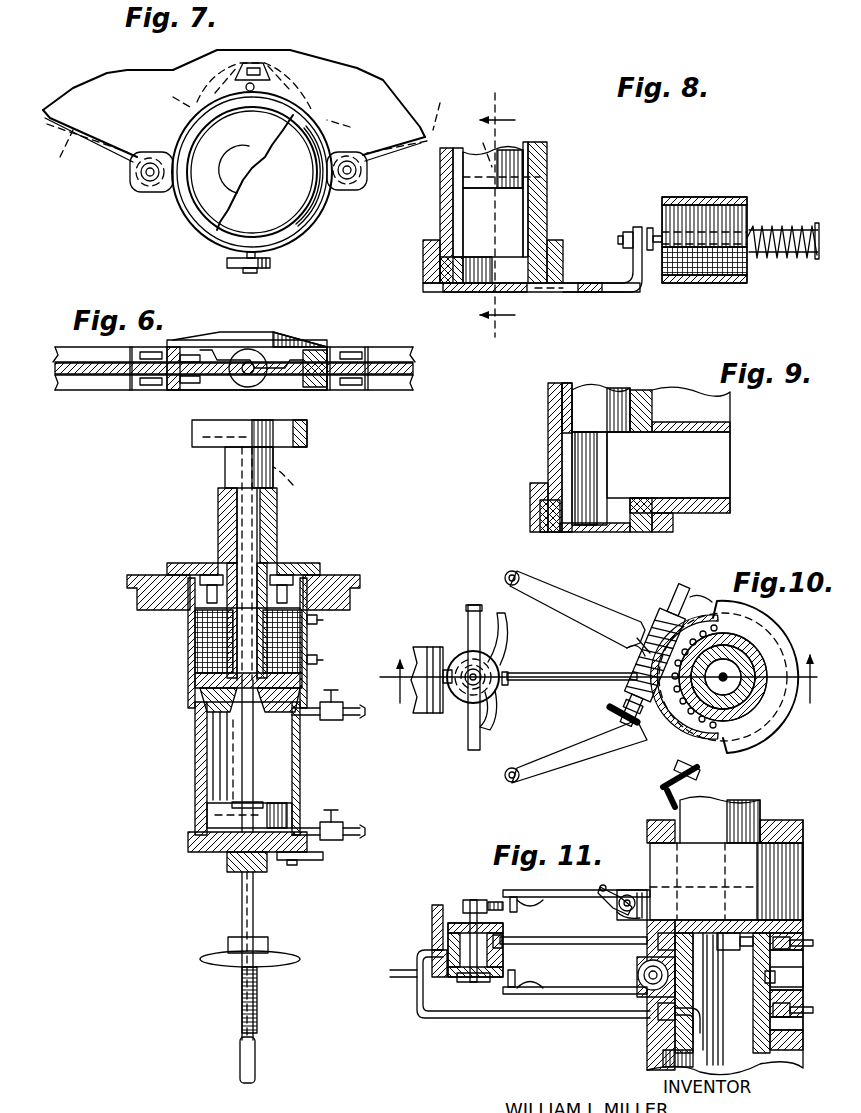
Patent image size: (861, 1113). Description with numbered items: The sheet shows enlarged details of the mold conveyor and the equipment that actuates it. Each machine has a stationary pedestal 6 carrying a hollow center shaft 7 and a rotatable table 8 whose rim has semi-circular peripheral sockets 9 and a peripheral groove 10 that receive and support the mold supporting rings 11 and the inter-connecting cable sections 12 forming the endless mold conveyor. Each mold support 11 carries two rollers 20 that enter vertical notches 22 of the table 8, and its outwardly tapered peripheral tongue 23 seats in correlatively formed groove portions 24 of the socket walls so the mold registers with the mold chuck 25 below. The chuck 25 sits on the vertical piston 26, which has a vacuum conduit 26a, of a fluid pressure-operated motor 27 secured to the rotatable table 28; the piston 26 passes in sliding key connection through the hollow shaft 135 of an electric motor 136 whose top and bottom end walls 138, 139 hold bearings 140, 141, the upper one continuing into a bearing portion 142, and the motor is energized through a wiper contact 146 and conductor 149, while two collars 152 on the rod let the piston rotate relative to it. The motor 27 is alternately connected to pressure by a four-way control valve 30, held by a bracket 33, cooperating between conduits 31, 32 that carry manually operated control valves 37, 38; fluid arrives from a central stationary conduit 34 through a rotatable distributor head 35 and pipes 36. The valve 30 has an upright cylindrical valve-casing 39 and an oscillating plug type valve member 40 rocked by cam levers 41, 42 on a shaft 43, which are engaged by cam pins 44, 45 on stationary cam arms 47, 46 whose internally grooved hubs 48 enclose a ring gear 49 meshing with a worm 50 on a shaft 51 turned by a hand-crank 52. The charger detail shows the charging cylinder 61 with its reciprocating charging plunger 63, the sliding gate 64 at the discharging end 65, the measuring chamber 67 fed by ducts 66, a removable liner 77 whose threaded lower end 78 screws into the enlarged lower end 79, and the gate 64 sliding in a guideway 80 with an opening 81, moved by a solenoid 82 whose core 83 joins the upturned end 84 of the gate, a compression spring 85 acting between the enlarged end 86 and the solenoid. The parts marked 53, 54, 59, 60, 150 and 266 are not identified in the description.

In FIG. 10, the stationary pedestal 6 is at (748, 717).
In FIG. 11, the stationary pedestal 6 is at (647, 1057).
In FIG. 10, the hollow center shaft 7 is at (747, 693).
In FIG. 11, the hollow center shaft 7 is at (765, 803).
In FIG. 7, the rotatable table 8 is at (363, 87).
In FIG. 6, the rotatable table 8 is at (377, 350).
In FIG. 7, the semi-circular peripheral sockets 9 is at (303, 130).
In FIG. 8, the semi-circular peripheral sockets 9 is at (497, 217).
In FIG. 7, the peripheral groove 10 is at (247, 132).
In FIG. 6, the peripheral groove 10 is at (92, 393).
In FIG. 7, the mold supporting ring 11 is at (317, 217).
In FIG. 6, the mold supporting ring 11 is at (327, 367).
In FIG. 10, the mold supporting ring 11 is at (601, 691).
In FIG. 7, the inter-connecting cable sections 12 is at (137, 160).
In FIG. 6, the inter-connecting cable sections 12 is at (55, 372).
In FIG. 7, the rollers 20 is at (260, 80).
In FIG. 8, the rollers 20 is at (469, 145).
In FIG. 6, the rollers 20 is at (253, 363).
In FIG. 7, the vertical notches 22 is at (273, 83).
In FIG. 7, the outwardly tapered peripheral tongue 23 is at (178, 205).
In FIG. 6, the outwardly tapered peripheral tongue 23 is at (170, 393).
In FIG. 7, the groove portions 24 is at (255, 105).
In FIG. 6, the groove portions 24 is at (168, 353).
In FIG. 6, the mold lifter or chuck 25 is at (303, 443).
In FIG. 6, the vertical piston 26 is at (250, 508).
In FIG. 6, the vacuum conduit 26a is at (302, 482).
In FIG. 6, the fluid pressure-operated motor 27 is at (192, 747).
In FIG. 6, the rotatable table 28 is at (353, 575).
In FIG. 10, the four-way control valve 30 is at (502, 698).
In FIG. 11, the four-way control valve 30 is at (514, 925).
In FIG. 6, the conduit 31 is at (367, 822).
In FIG. 10, the conduit 31 is at (475, 740).
In FIG. 6, the conduit 32 is at (357, 710).
In FIG. 10, the conduit 32 is at (472, 627).
In FIG. 6, the bracket 33 is at (313, 862).
In FIG. 10, the bracket 33 is at (472, 723).
In FIG. 11, the bracket 33 is at (403, 972).
In FIG. 10, the central stationary conduit 34 is at (730, 673).
In FIG. 11, the central stationary conduit 34 is at (760, 803).
In FIG. 10, the distributor head 35 is at (737, 747).
In FIG. 11, the distributor head 35 is at (657, 947).
In FIG. 10, the pipes 36 is at (577, 675).
In FIG. 11, the pipes 36 is at (565, 944).
In FIG. 6, the manually operated control valve 37 is at (333, 812).
In FIG. 6, the manually operated control valve 38 is at (333, 692).
In FIG. 10, the cylindrical valve-casing 39 is at (457, 660).
In FIG. 11, the cylindrical valve-casing 39 is at (450, 917).
In FIG. 10, the oscillating plug type valve member 40 is at (490, 657).
In FIG. 11, the oscillating plug type valve member 40 is at (432, 920).
In FIG. 10, the cam lever 41 is at (483, 723).
In FIG. 11, the cam lever 41 is at (473, 982).
In FIG. 10, the cam lever 42 is at (497, 613).
In FIG. 11, the cam lever 42 is at (493, 902).
In FIG. 10, the shaft 43 is at (507, 673).
In FIG. 11, the shaft 43 is at (503, 944).
In FIG. 10, the cam pin 44 is at (530, 790).
In FIG. 11, the cam pin 44 is at (531, 999).
In FIG. 10, the cam pin 45 is at (525, 577).
In FIG. 11, the cam pin 45 is at (533, 900).
In FIG. 10, the stationary cam arm 46 is at (703, 603).
In FIG. 11, the stationary cam arm 46 is at (600, 890).
In FIG. 10, the stationary cam arm 47 is at (583, 747).
In FIG. 11, the stationary cam arm 47 is at (575, 992).
In FIG. 11, the internally grooved hub 48 is at (660, 900).
In FIG. 10, the ring gear 49 is at (717, 620).
In FIG. 11, the ring gear 49 is at (693, 1003).
In FIG. 10, the worm 50 is at (660, 627).
In FIG. 11, the worm 50 is at (638, 972).
In FIG. 10, the shaft 51 is at (670, 597).
In FIG. 11, the shaft 51 is at (640, 897).
In FIG. 10, the hand-crank 52 is at (607, 723).
In FIG. 11, the hand-crank 52 is at (627, 913).
In FIG. 10, the pipe 53 is at (430, 660).
In FIG. 11, the pipe 53 is at (417, 998).
In FIG. 11, the pipe elbow 54 is at (693, 1020).
In FIG. 11, the bottom plate 59 is at (703, 1053).
In FIG. 8, the cavity 60 is at (493, 215).
In FIG. 8, the charging cylinder 61 is at (547, 172).
In FIG. 9, the charging cylinder 61 is at (550, 415).
In FIG. 8, the charging plunger 63 is at (512, 150).
In FIG. 9, the charging plunger 63 is at (598, 400).
In FIG. 8, the sliding gate 64 is at (605, 292).
In FIG. 9, the sliding gate 64 is at (630, 532).
In FIG. 8, the discharging end 65 is at (440, 277).
In FIG. 9, the passages or ducts 66 is at (685, 450).
In FIG. 8, the clay-charge-measuring chamber 67 is at (505, 228).
In FIG. 9, the clay-charge-measuring chamber 67 is at (593, 462).
In FIG. 8, the cylinder liner 77 is at (447, 210).
In FIG. 9, the cylinder liner 77 is at (567, 400).
In FIG. 8, the exteriorly threaded lower end 78 is at (535, 292).
In FIG. 9, the exteriorly threaded lower end 78 is at (550, 510).
In FIG. 8, the enlarged lower end 79 is at (430, 258).
In FIG. 9, the enlarged lower end 79 is at (537, 522).
In FIG. 8, the guideway 80 is at (445, 292).
In FIG. 9, the guideway 80 is at (580, 532).
In FIG. 8, the opening 81 is at (580, 292).
In FIG. 8, the electric solenoid 82 is at (717, 210).
In FIG. 8, the sliding core 83 is at (768, 260).
In FIG. 8, the upturned end 84 is at (638, 230).
In FIG. 8, the coiled compression spring 85 is at (772, 232).
In FIG. 8, the enlarged end 86 is at (815, 262).
In FIG. 6, the hollow shaft 135 is at (233, 623).
In FIG. 6, the electric motor 136 is at (186, 652).
In FIG. 6, the top end wall 138 is at (215, 563).
In FIG. 6, the bottom end wall 139 is at (220, 678).
In FIG. 6, the bearing 140 is at (287, 567).
In FIG. 6, the bearing 141 is at (213, 690).
In FIG. 6, the bearing portion 142 is at (218, 512).
In FIG. 6, the wiper contact 146 is at (323, 620).
In FIG. 6, the conductor 149 is at (317, 660).
In FIG. 6, the piston 150 is at (217, 815).
In FIG. 6, the collars 152 is at (263, 803).
In FIG. 6, the threaded shaft 266 is at (240, 1054).